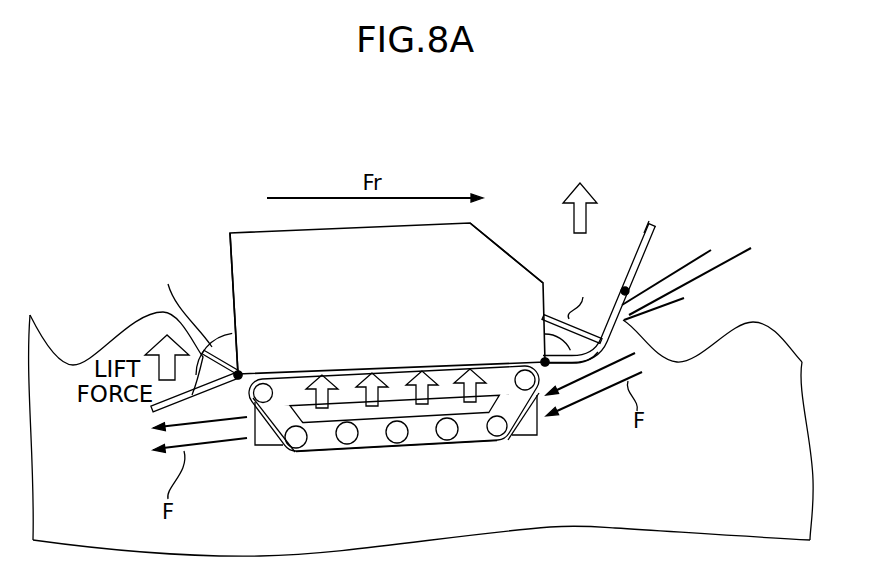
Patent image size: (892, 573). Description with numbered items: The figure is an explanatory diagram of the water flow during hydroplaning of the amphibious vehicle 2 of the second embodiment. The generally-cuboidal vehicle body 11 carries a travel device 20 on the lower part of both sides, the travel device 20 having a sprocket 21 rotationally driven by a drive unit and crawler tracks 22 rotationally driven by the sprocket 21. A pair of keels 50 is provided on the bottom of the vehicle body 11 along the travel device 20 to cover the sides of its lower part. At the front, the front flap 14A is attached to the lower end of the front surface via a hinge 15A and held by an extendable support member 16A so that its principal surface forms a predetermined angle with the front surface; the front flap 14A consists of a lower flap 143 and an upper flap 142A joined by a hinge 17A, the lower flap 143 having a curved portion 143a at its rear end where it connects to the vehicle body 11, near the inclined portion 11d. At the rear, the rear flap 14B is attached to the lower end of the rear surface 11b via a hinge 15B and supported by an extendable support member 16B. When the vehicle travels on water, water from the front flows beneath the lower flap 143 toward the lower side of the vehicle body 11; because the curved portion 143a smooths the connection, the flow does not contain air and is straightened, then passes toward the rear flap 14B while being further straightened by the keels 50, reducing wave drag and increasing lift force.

The amphibious vehicle 2 is at (346, 138).
The vehicle body 11 is at (245, 233).
The rear surface 11b is at (228, 253).
The body rear inclined portion 11d is at (492, 238).
The front flap 14A is at (652, 249).
The rear flap 14B is at (148, 413).
The hinge 15A is at (543, 359).
The hinge 15B is at (237, 383).
The extendable support member 16A is at (543, 314).
The extendable support member 16B is at (208, 350).
The hinge 17A is at (628, 293).
The travel device 20 is at (269, 466).
The sprocket 21 is at (298, 443).
The crawler tracks 22 is at (369, 451).
The keels 50 is at (524, 431).
The upper flap 142A is at (655, 221).
The lower flap 143 is at (607, 302).
The curved portion 143a is at (593, 364).